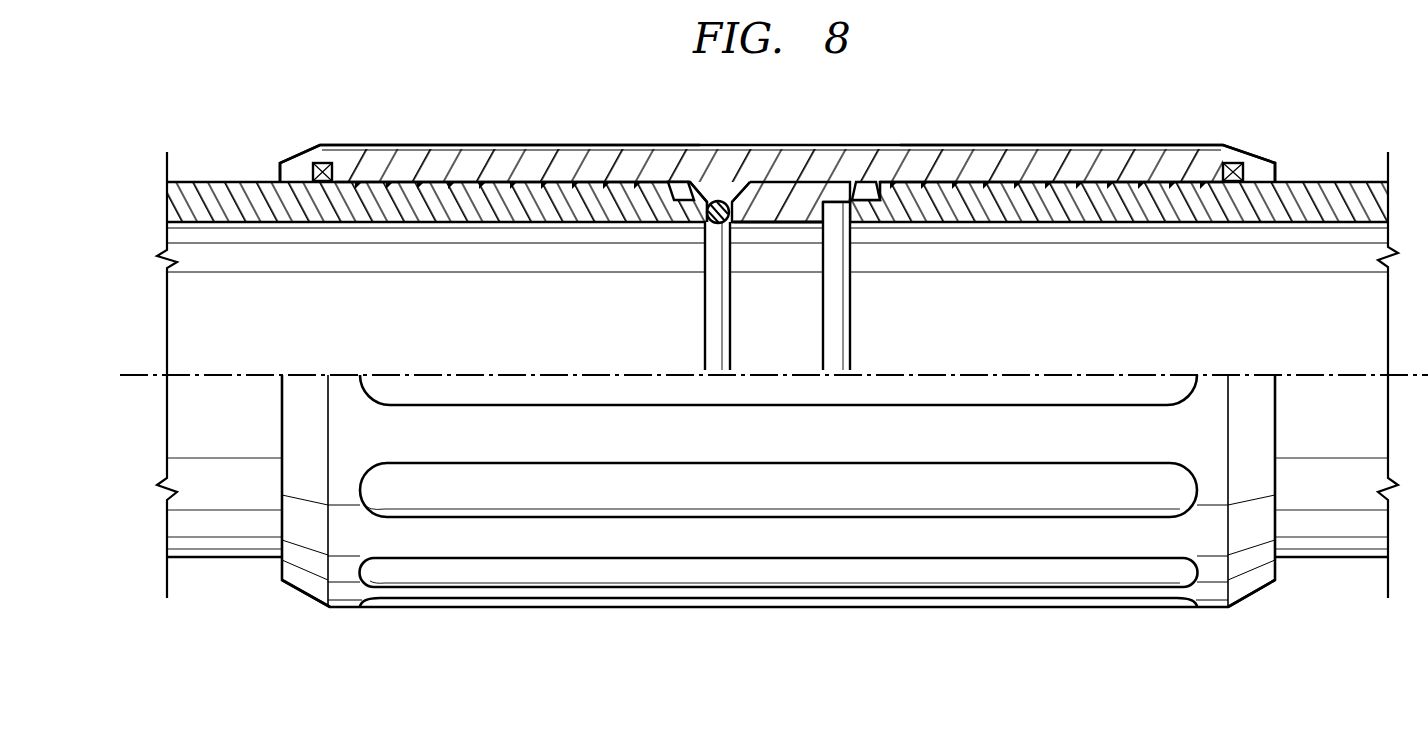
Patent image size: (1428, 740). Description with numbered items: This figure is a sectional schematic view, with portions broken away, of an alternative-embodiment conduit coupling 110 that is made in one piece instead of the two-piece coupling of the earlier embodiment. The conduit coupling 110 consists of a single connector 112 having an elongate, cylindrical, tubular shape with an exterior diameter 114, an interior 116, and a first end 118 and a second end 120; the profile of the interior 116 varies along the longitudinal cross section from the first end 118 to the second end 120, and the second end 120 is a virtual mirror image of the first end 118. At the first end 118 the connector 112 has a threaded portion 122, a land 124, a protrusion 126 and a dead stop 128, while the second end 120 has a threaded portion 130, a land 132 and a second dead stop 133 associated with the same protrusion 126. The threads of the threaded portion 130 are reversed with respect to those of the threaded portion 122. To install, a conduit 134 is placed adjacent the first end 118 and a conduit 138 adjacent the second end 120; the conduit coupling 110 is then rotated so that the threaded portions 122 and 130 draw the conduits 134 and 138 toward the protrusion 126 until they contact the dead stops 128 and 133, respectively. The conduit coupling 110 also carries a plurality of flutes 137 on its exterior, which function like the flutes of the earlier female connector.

The conduit coupling 110 is at (1095, 94).
The connector 112 is at (765, 614).
The exterior diameter 114 is at (400, 146).
The interior 116 is at (473, 186).
The first end 118 is at (1213, 630).
The second end 120 is at (346, 630).
The threaded portion 122 is at (1004, 206).
The land 124 is at (838, 226).
The protrusion 126 is at (803, 224).
The dead stop 128 is at (812, 197).
The threaded portion 130 is at (585, 206).
The land 132 is at (712, 200).
The second dead stop 133 is at (746, 198).
The conduit 134 is at (1351, 430).
The flutes 137 is at (1012, 146).
The conduit 138 is at (251, 430).